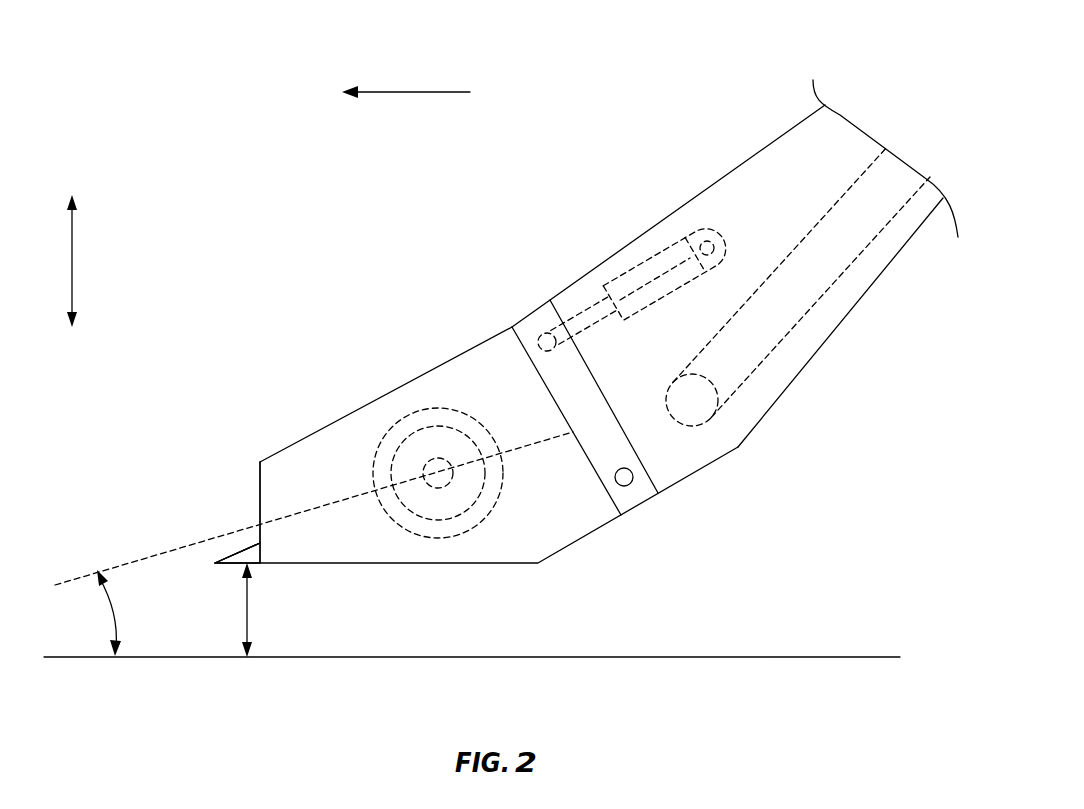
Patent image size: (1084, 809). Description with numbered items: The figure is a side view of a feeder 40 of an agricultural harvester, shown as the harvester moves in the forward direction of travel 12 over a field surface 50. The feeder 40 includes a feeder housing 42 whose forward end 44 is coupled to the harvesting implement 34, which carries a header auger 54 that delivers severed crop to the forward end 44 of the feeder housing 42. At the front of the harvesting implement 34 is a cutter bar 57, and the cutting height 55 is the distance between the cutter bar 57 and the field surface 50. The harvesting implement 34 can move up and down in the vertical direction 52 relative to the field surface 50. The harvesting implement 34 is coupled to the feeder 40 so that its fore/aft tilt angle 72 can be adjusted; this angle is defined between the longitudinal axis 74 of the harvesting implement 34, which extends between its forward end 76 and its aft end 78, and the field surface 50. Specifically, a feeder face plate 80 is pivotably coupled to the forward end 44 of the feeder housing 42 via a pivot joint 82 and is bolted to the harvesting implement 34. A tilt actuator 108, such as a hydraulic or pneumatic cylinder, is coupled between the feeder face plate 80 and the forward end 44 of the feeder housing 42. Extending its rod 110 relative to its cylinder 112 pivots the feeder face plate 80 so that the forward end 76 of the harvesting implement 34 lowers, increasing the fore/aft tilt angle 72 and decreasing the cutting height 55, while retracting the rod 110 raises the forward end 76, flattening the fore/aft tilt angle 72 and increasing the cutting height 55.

The forward direction of travel 12 is at (413, 90).
The feeder 40 is at (163, 68).
The harvesting implement 34 is at (333, 425).
The feeder housing 42 is at (817, 352).
The forward end of the feeder housing 44 is at (617, 237).
The field surface 50 is at (797, 657).
The vertical direction 52 is at (73, 265).
The header auger 54 is at (432, 407).
The cutting height 55 is at (247, 620).
The cutter bar 57 is at (233, 555).
The fore/aft tilt angle 72 is at (117, 622).
The longitudinal axis 74 is at (152, 552).
The forward end of the harvesting implement 76 is at (237, 472).
The aft end of the harvesting implement 78 is at (492, 317).
The feeder face plate 80 is at (548, 306).
The pivot joint 82 is at (628, 486).
The tilt actuator 108 is at (668, 245).
The rod 110 is at (598, 303).
The cylinder 112 is at (652, 307).